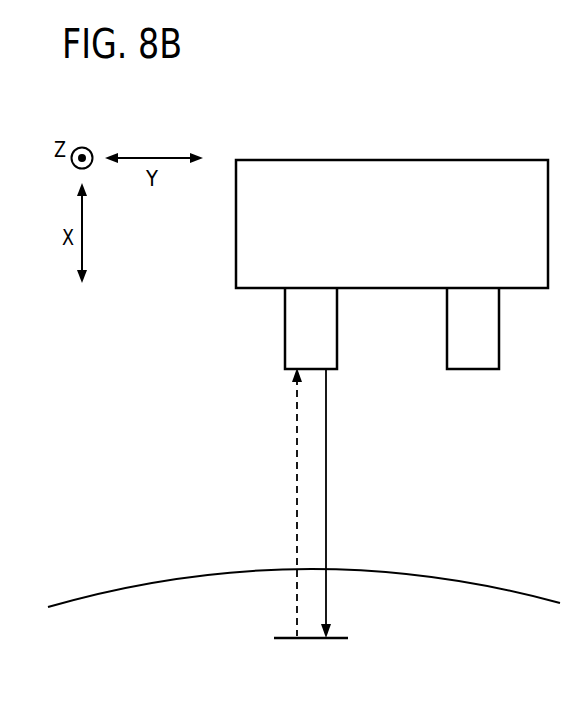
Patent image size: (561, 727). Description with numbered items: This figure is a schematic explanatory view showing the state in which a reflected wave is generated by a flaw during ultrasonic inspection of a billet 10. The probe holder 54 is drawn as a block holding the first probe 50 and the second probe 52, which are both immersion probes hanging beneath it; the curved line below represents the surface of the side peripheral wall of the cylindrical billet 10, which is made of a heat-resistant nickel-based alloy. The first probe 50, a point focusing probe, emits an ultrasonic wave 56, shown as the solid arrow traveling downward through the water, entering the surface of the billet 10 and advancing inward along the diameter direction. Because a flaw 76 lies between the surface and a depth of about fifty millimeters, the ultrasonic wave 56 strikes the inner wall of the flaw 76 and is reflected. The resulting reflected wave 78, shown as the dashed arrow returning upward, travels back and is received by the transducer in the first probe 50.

The billet 10 is at (478, 582).
The first probe 50 is at (296, 333).
The second probe 52 is at (490, 337).
The probe holder 54 is at (483, 170).
The ultrasonic wave 56 is at (327, 482).
The flaw 76 is at (285, 641).
The reflected wave 78 is at (296, 474).